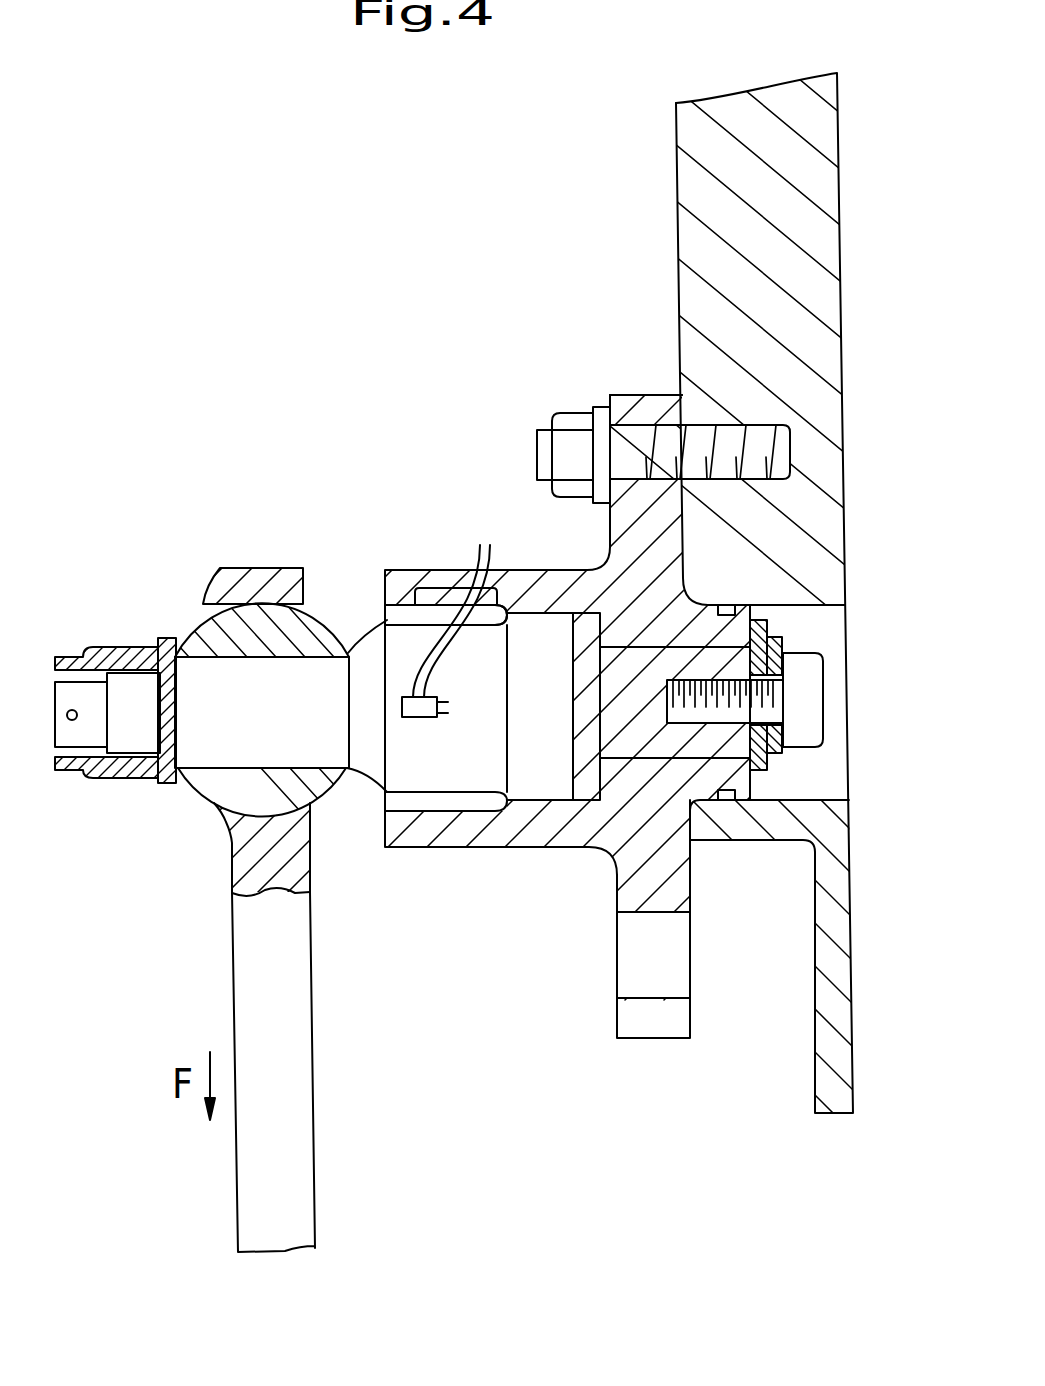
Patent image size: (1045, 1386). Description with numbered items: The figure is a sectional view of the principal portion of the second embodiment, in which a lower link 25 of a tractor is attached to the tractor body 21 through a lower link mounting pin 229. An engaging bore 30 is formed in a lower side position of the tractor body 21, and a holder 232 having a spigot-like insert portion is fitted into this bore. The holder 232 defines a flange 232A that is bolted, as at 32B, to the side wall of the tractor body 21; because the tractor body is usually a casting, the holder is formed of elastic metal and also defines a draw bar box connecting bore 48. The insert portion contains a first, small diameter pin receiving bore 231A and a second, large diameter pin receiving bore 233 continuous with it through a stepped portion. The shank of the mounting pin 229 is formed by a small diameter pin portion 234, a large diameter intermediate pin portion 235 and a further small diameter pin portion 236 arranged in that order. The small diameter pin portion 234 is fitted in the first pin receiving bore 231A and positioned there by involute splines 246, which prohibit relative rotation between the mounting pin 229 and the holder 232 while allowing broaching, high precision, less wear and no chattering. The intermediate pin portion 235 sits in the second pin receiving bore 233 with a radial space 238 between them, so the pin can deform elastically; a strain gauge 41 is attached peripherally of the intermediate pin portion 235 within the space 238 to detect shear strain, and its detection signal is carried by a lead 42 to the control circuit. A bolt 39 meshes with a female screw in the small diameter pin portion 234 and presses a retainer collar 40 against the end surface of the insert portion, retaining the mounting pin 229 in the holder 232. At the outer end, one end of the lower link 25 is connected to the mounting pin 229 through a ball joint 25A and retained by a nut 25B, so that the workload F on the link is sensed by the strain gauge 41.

The tractor body 21 is at (688, 238).
The engaging bore 30 is at (850, 627).
The holder 232 is at (407, 561).
The flange 232A is at (627, 394).
The bolt 32B is at (555, 413).
The radial space 238 is at (385, 617).
The large diameter intermediate pin portion 235 is at (480, 635).
The second pin receiving bore 233 is at (537, 777).
The first pin receiving bore 231A is at (617, 737).
The small diameter pin portion 234 is at (633, 650).
The bolt 39 is at (828, 712).
The involute splines 246 is at (742, 620).
The retainer collar 40 is at (768, 771).
The draw bar box connecting bore 48 is at (628, 970).
The strain gauge 41 is at (420, 705).
The lead 42 is at (440, 645).
The small diameter pin portion 236 is at (257, 670).
The ball joint 25A is at (193, 637).
The nut 25B is at (95, 652).
The mounting pin 229 is at (157, 723).
The lower link 25 is at (298, 1067).